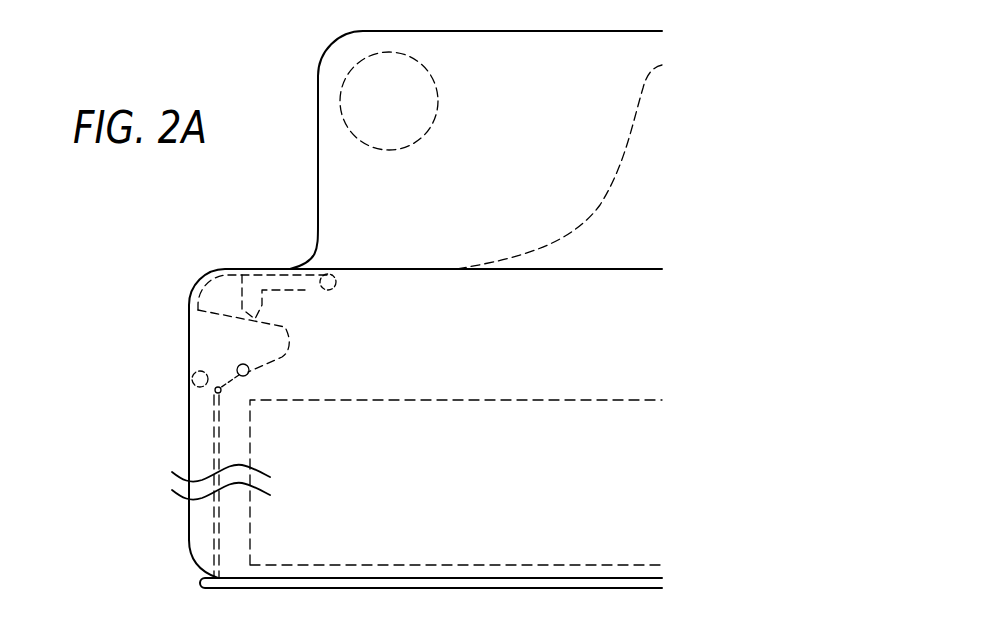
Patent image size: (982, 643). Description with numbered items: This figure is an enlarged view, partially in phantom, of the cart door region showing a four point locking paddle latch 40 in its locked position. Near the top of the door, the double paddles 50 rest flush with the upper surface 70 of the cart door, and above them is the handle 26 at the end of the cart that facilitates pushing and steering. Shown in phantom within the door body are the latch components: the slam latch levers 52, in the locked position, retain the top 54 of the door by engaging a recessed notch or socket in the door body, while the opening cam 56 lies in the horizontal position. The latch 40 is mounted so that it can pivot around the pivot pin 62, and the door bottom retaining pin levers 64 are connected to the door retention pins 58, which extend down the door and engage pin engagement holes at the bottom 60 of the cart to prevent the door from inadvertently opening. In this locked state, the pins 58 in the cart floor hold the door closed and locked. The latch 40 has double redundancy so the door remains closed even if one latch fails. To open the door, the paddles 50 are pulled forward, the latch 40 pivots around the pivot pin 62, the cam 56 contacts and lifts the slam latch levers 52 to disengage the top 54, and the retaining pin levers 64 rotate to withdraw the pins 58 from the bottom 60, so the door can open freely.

The handle 26 is at (437, 110).
The four point locking paddle latch 40 is at (188, 333).
The double paddles 50 is at (202, 286).
The slam latch levers 52 is at (306, 291).
The top of the door 54 is at (580, 281).
The opening cam 56 is at (272, 334).
The door retention pins 58 is at (212, 428).
The bottom of the cart 60 is at (198, 583).
The pivot pin 62 is at (198, 373).
The door bottom retaining pin levers 64 is at (235, 379).
The upper surface of the cart door 70 is at (254, 267).